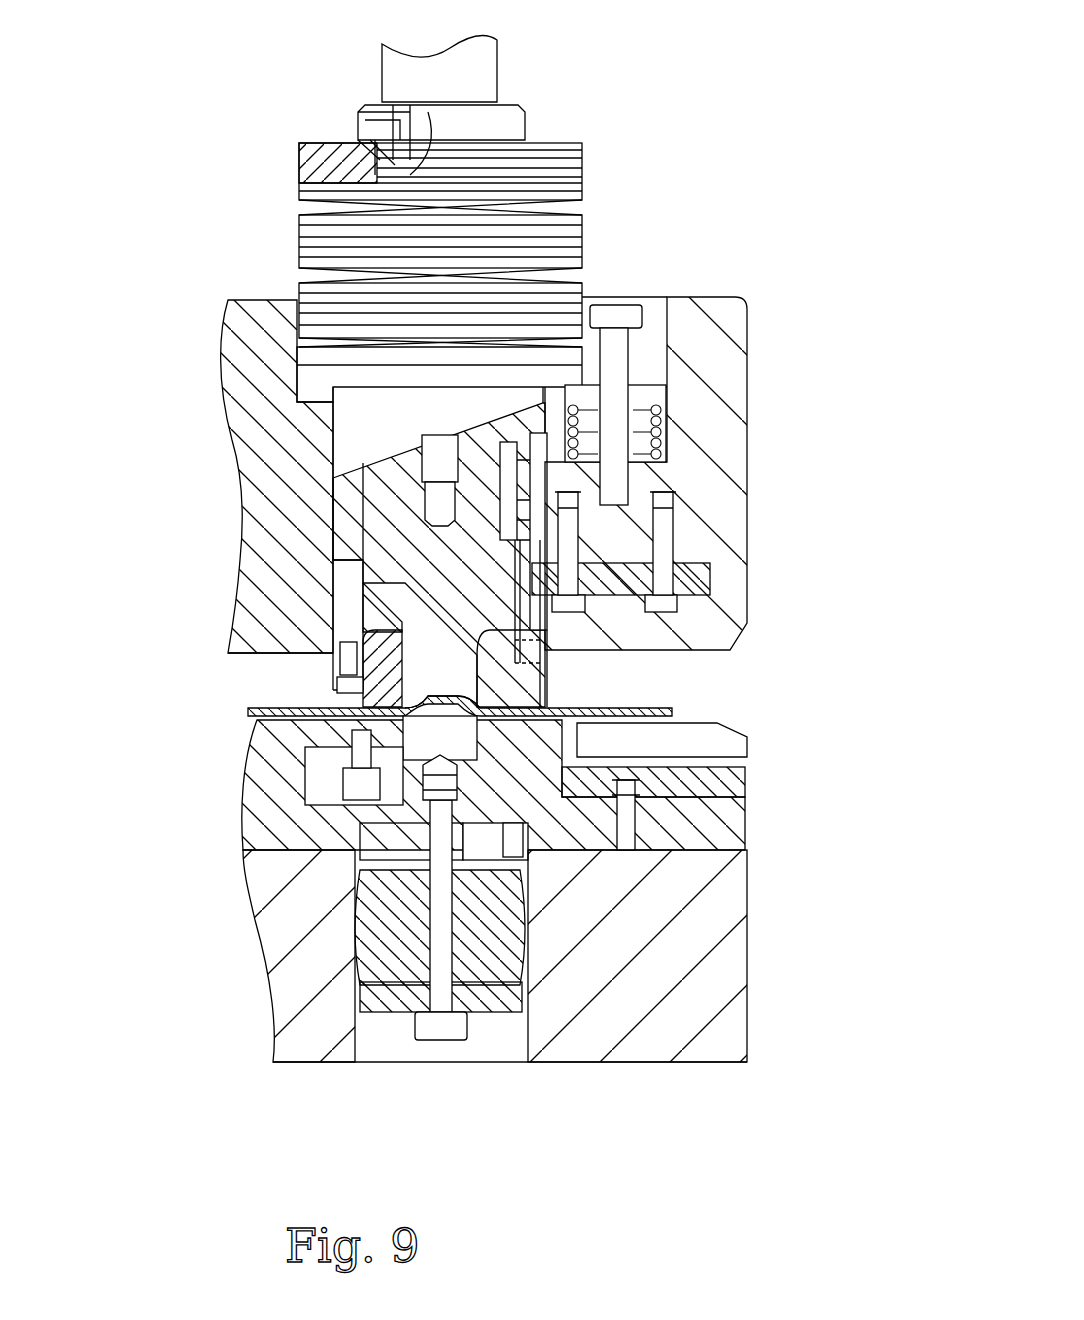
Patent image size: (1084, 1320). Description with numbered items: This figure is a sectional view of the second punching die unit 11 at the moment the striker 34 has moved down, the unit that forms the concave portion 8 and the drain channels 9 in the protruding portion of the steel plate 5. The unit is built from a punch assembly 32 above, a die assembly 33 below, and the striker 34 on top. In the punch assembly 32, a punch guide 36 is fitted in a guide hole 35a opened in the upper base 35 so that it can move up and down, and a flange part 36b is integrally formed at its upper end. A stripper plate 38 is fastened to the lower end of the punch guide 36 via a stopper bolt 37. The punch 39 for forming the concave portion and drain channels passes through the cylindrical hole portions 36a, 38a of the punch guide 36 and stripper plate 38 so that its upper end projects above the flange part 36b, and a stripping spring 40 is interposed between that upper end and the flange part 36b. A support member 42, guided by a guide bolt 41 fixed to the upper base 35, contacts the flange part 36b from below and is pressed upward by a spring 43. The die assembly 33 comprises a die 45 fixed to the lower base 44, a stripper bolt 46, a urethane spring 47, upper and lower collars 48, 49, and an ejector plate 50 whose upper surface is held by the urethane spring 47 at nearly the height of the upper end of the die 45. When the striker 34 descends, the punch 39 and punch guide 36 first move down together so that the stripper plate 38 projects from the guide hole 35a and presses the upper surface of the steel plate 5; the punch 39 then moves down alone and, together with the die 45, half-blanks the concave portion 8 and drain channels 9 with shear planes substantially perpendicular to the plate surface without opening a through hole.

The steel plate 5 is at (670, 710).
The concave portion 8 is at (520, 700).
The drain channels 9 is at (580, 702).
The second punching die unit 11 is at (672, 183).
The punch assembly 32 is at (206, 453).
The die assembly 33 is at (230, 1000).
The striker 34 is at (475, 72).
The upper base 35 is at (280, 508).
The guide hole 35a is at (330, 620).
The punch guide 36 is at (328, 465).
The cylindrical hole portion 36a is at (342, 603).
The flange part 36b is at (317, 373).
The stopper bolt 37 is at (350, 705).
The stripper plate 38 is at (415, 692).
The cylindrical hole portion 38a is at (345, 660).
The punch 39 is at (485, 617).
The stripping spring 40 is at (320, 240).
The guide bolt 41 is at (615, 350).
The support member 42 is at (660, 395).
The spring 43 is at (665, 433).
The lower base 44 is at (690, 828).
The die 45 is at (425, 745).
The stripper bolt 46 is at (440, 990).
The urethane spring 47 is at (488, 940).
The upper collar 48 is at (375, 840).
The lower collar 49 is at (375, 998).
The ejector plate 50 is at (690, 755).